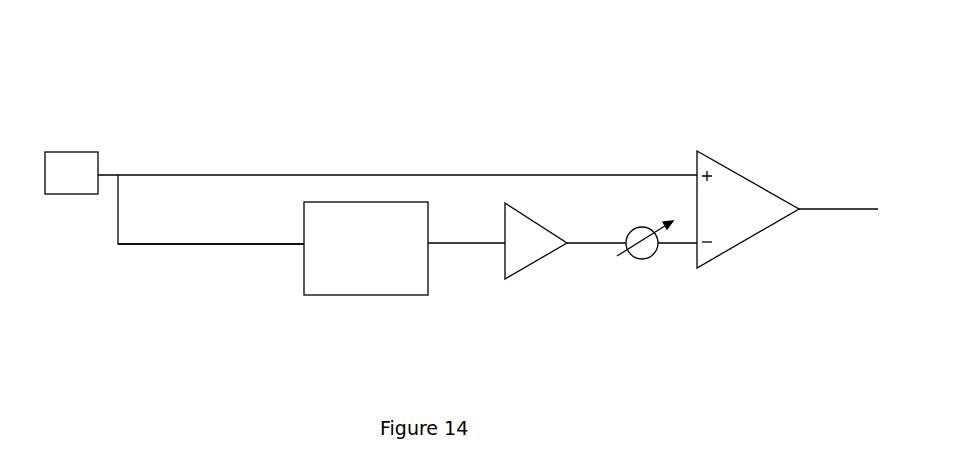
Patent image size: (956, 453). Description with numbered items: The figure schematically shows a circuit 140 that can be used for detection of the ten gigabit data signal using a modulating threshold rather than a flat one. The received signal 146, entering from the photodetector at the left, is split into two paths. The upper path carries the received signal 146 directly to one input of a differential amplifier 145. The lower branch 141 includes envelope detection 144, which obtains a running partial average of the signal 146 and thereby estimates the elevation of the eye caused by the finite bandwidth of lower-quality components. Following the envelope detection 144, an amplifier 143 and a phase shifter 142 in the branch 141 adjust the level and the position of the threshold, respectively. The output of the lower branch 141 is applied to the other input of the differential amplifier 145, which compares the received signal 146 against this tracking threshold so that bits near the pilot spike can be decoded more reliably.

The circuit 140 is at (210, 119).
The lower branch 141 is at (185, 246).
The phase shifter 142 is at (625, 323).
The amplifier 143 is at (516, 279).
The envelope detection 144 is at (320, 297).
The differential amplifier 145 is at (765, 282).
The received signal 146 is at (55, 196).